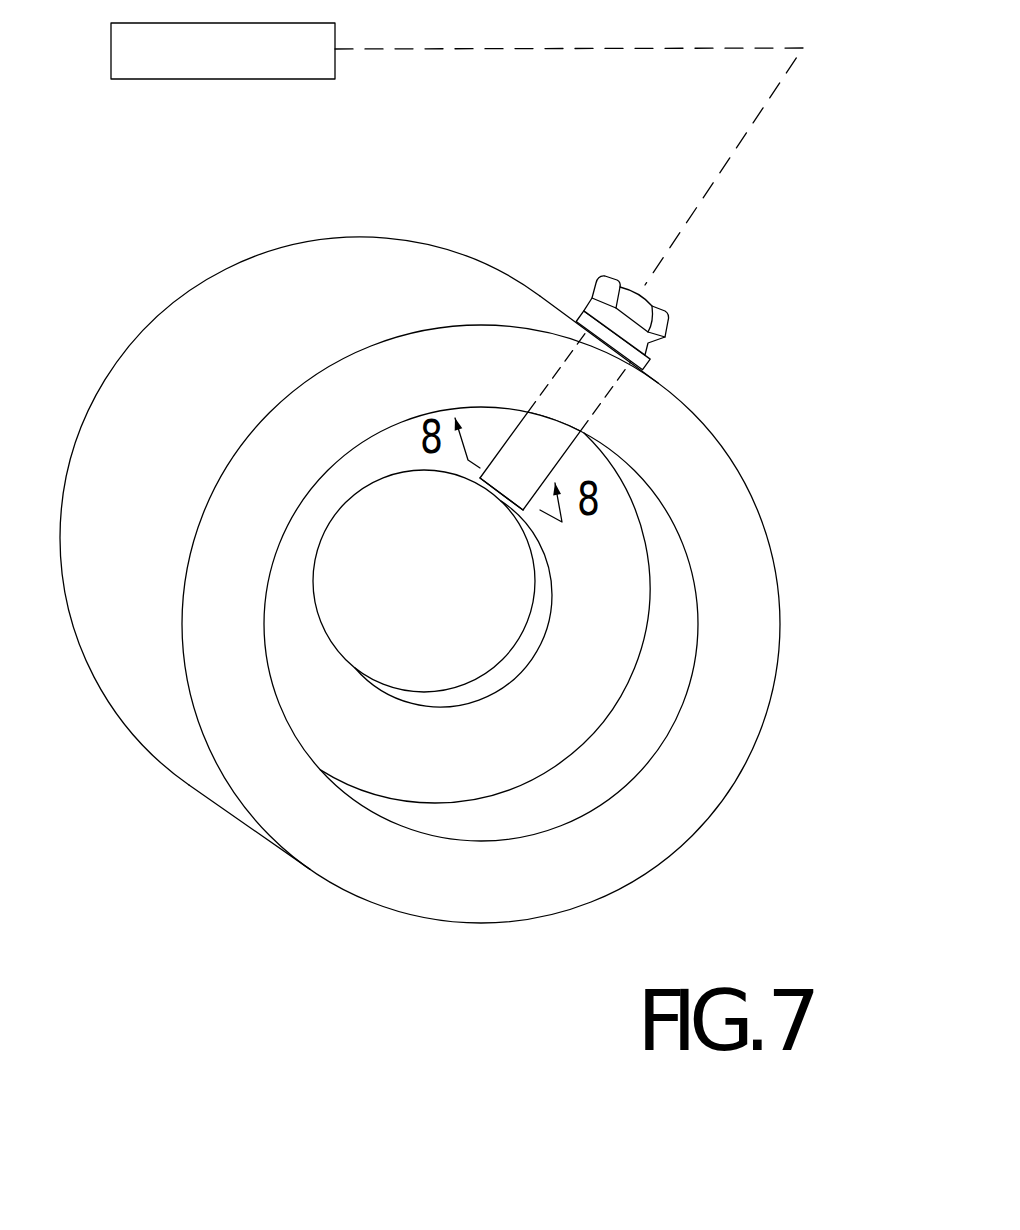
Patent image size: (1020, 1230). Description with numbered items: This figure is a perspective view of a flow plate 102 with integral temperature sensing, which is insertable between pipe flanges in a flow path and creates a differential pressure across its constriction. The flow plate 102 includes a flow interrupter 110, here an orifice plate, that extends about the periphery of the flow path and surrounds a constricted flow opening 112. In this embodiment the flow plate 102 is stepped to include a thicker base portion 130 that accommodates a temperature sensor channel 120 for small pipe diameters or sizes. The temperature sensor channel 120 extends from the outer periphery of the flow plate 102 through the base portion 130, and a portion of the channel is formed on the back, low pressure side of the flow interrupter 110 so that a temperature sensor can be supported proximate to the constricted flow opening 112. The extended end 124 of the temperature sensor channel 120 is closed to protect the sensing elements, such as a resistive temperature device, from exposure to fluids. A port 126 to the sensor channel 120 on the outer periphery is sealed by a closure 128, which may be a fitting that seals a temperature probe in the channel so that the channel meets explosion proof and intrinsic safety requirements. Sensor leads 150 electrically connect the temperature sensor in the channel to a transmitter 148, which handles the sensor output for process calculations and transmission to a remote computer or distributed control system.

The flow plate 102 is at (781, 607).
The flow interrupter 110 is at (472, 760).
The constricted flow opening 112 is at (393, 622).
The temperature sensor channel 120 is at (590, 377).
The extended end 124 is at (500, 493).
The port 126 is at (580, 320).
The closure 128 is at (657, 303).
The base portion 130 is at (513, 895).
The transmitter 148 is at (195, 80).
The sensor leads 150 is at (757, 117).